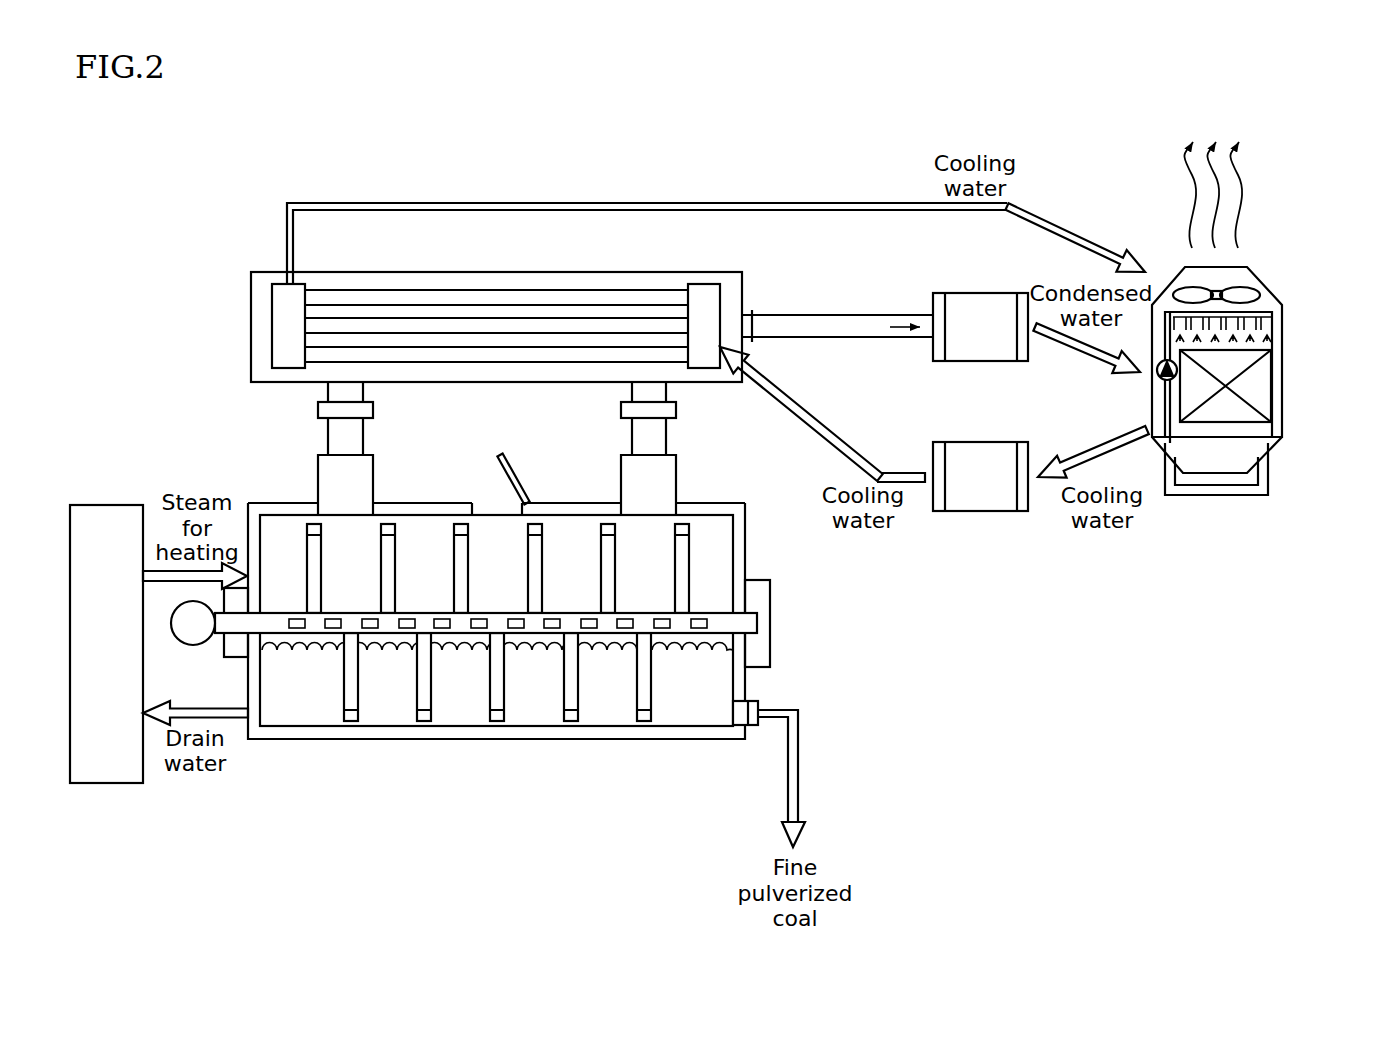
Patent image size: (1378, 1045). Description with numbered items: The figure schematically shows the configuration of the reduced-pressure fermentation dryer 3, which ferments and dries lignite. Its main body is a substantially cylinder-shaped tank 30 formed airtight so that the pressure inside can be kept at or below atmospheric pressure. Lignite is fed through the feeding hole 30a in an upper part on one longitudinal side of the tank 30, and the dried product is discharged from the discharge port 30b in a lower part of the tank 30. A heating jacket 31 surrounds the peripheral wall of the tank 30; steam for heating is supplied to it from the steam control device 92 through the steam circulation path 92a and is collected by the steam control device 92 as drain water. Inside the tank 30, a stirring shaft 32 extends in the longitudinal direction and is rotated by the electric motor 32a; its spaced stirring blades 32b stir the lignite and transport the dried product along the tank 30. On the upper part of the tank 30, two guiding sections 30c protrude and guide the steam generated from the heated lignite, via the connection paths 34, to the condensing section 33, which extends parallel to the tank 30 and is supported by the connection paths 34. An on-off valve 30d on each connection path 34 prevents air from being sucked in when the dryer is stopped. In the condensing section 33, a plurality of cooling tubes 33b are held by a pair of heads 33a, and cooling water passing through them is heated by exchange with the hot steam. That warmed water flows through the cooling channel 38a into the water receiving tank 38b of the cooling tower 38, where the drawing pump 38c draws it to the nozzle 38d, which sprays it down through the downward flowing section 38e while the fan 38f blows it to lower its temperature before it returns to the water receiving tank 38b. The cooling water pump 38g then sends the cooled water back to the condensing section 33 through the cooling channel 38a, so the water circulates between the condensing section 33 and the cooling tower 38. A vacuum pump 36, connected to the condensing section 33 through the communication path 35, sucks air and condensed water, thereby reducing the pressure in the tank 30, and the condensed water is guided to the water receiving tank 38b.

The reduced-pressure fermentation dryer 3 is at (477, 614).
The tank 30 is at (335, 738).
The feeding hole 30a is at (493, 496).
The discharge port 30b is at (742, 726).
The guiding section 30c is at (318, 480).
The on-off valve 30d is at (373, 410).
The heating jacket 31 is at (495, 728).
The stirring shaft 32 is at (272, 625).
The electric motor 32a is at (193, 645).
The stirring blades 32b is at (336, 620).
The condensing section 33 is at (472, 299).
The heads 33a is at (281, 283).
The cooling tubes 33b is at (459, 304).
The connection paths 34 is at (325, 392).
The communication path 35 is at (917, 314).
The vacuum pump 36 is at (1002, 300).
The cooling tower 38 is at (827, 348).
The cooling channel 38a is at (1050, 173).
The water receiving tank 38b is at (1210, 466).
The drawing pump 38c is at (1158, 378).
The nozzle 38d is at (1258, 320).
The downward flowing section 38e is at (1265, 388).
The fan 38f is at (1250, 292).
The cooling water pump 38g is at (1000, 505).
The steam control device 92 is at (107, 505).
The steam circulation path 92a is at (189, 788).